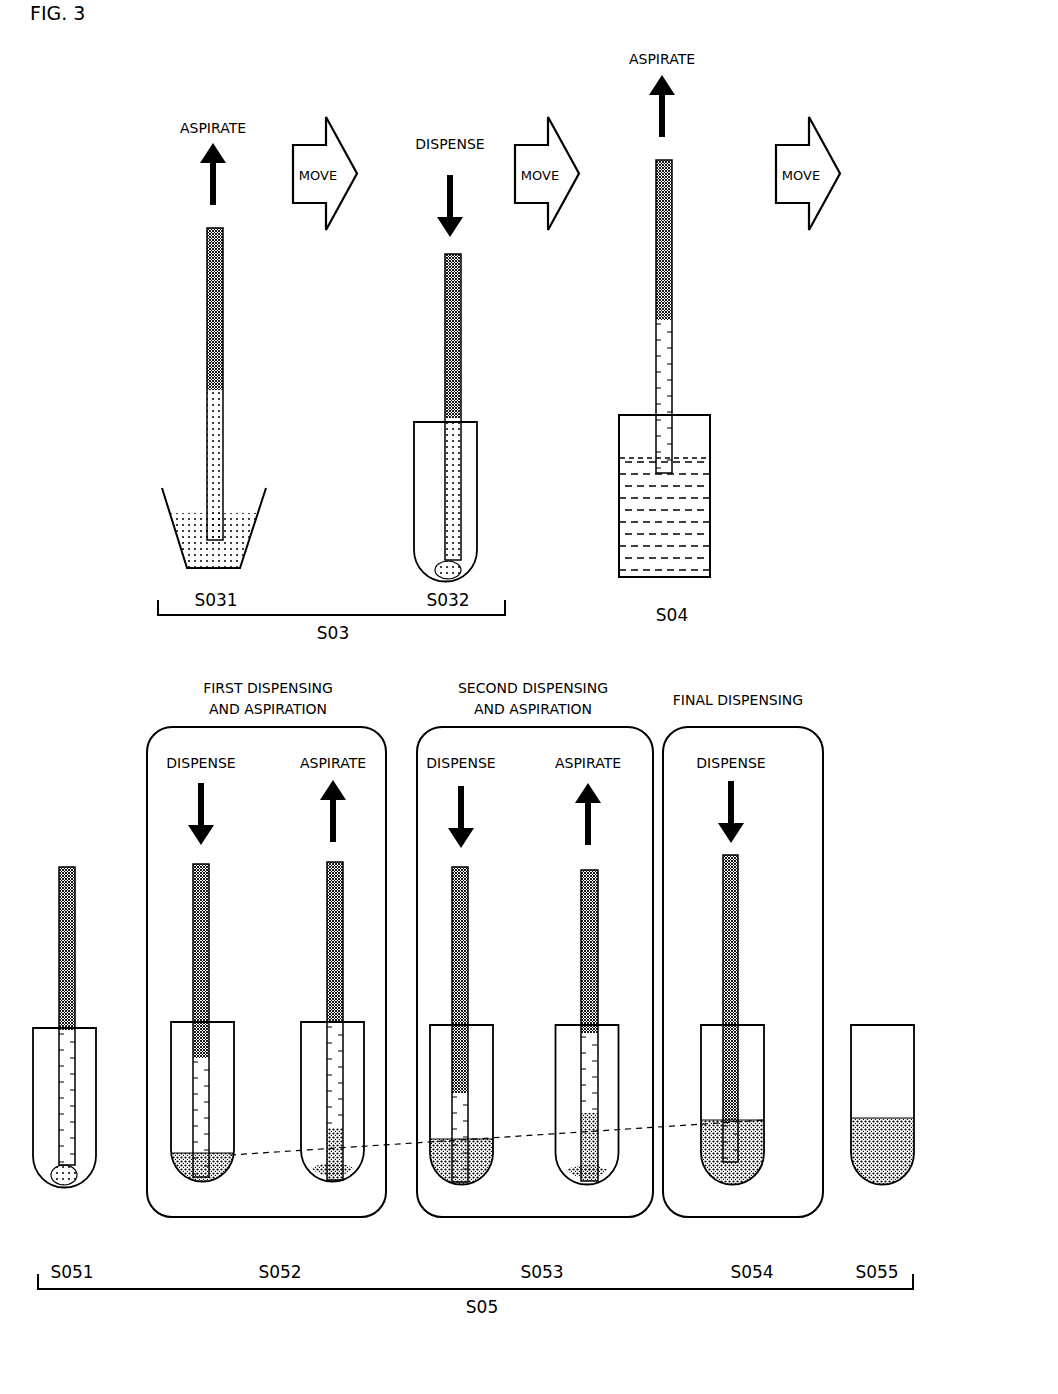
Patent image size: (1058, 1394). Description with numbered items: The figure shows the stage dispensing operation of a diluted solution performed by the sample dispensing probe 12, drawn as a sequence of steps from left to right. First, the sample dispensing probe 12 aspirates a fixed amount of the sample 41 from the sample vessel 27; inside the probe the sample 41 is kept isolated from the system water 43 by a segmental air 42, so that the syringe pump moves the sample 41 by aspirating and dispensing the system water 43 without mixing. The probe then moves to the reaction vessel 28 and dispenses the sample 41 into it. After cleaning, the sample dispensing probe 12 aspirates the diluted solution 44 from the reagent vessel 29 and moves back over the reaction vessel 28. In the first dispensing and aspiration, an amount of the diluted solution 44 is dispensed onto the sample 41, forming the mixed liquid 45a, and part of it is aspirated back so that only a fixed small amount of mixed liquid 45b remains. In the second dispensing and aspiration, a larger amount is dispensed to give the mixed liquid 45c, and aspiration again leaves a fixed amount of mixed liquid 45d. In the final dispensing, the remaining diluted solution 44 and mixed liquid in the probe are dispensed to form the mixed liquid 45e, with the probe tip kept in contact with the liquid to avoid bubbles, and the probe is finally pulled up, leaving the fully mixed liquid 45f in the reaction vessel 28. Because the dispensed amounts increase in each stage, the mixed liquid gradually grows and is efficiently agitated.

The sample dispensing probe 12 is at (207, 300).
The system water 43 is at (215, 330).
The segmental air 42 is at (215, 420).
The sample 41 is at (215, 478).
The sample vessel 27 is at (169, 520).
The reaction vessel 28 is at (477, 428).
The reagent vessel 29 is at (619, 450).
The diluted solution 44 is at (690, 483).
The mixed liquid 45a is at (212, 1180).
The mixed liquid 45b is at (330, 1182).
The mixed liquid 45c is at (470, 1183).
The mixed liquid 45d is at (587, 1183).
The mixed liquid 45e is at (755, 1172).
The mixed liquid 45f is at (872, 1185).